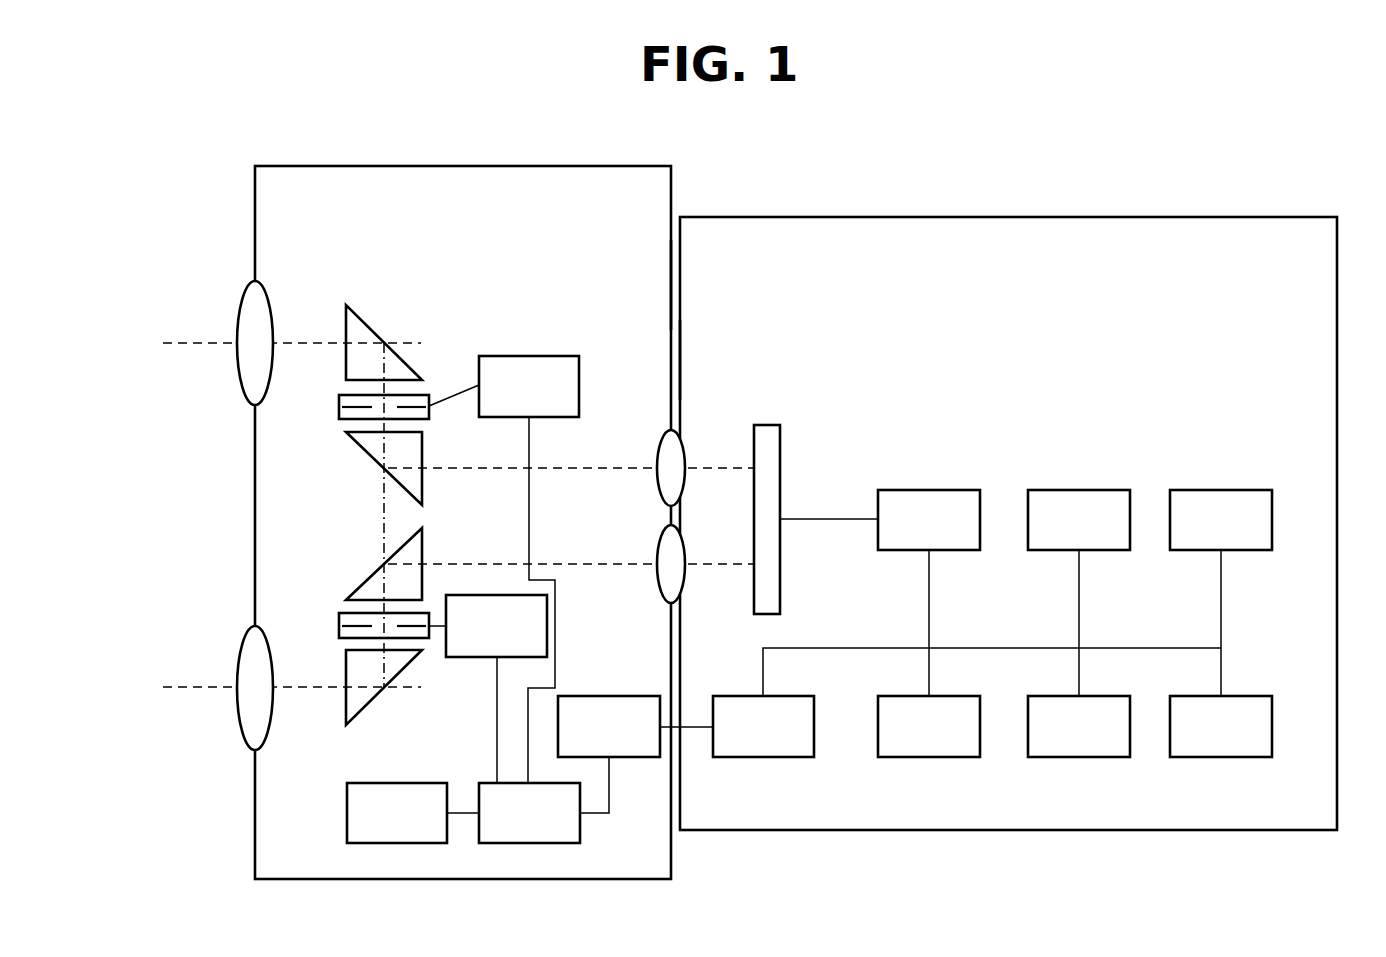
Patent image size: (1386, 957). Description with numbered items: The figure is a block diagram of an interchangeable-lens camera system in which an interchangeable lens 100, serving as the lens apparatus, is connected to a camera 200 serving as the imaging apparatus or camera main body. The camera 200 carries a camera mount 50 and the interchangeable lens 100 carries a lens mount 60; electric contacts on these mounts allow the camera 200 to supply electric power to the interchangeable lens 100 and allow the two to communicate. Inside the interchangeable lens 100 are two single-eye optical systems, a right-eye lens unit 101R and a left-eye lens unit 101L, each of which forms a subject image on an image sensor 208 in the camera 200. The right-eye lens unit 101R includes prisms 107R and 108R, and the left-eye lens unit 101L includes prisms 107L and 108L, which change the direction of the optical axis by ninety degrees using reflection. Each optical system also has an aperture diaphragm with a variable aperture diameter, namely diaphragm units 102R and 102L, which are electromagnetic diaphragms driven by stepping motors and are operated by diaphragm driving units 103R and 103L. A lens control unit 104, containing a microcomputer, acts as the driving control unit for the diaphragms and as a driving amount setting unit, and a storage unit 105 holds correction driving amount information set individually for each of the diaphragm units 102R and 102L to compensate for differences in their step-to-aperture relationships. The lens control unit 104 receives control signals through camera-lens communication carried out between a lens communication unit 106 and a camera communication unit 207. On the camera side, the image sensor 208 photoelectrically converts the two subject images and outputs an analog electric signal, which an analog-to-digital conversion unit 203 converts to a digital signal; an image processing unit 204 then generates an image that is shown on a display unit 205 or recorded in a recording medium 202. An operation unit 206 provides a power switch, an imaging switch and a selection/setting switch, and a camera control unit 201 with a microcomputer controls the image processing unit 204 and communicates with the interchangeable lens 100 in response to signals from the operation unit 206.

The interchangeable lens 100 is at (398, 166).
The camera 200 is at (1012, 217).
The lens mount 60 is at (671, 285).
The camera mount 50 is at (681, 362).
The right-eye lens unit 101R is at (240, 305).
The left-eye lens unit 101L is at (240, 650).
The prism 107R is at (368, 323).
The prism 107L is at (400, 695).
The prism 108R is at (393, 483).
The prism 108L is at (393, 555).
The diaphragm unit 102R is at (342, 420).
The diaphragm unit 102L is at (342, 612).
The diaphragm driving unit 103R is at (495, 400).
The diaphragm driving unit 103L is at (463, 640).
The lens control unit 104 is at (504, 827).
The storage unit 105 is at (372, 827).
The lens communication unit 106 is at (584, 740).
The camera communication unit 207 is at (738, 740).
The camera control unit 201 is at (904, 740).
The recording medium 202 is at (1054, 740).
The analog-to-digital conversion unit 203 is at (904, 534).
The image processing unit 204 is at (1054, 534).
The display unit 205 is at (1196, 534).
The operation unit 206 is at (1196, 740).
The image sensor 208 is at (781, 478).